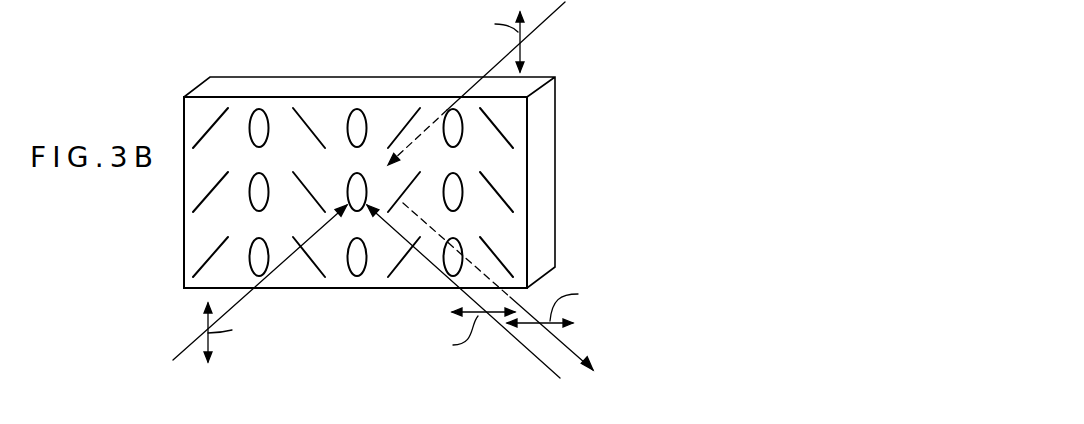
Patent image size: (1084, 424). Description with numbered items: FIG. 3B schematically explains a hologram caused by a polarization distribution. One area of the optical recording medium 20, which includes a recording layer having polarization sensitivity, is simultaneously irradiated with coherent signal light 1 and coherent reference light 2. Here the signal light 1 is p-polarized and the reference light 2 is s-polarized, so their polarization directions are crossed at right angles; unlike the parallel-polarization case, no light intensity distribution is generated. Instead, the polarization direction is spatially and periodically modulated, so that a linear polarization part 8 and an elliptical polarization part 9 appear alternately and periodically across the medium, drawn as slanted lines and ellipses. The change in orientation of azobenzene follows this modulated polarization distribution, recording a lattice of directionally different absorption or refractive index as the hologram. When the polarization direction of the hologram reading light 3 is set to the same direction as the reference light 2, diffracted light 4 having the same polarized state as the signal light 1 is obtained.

The signal light 1 is at (548, 368).
The reference light 2 is at (173, 360).
The hologram reading light 3 is at (543, 22).
The diffracted light 4 is at (565, 345).
The linear polarization part 8 is at (305, 120).
The elliptical polarization part 9 is at (362, 110).
The optical recording medium 20 is at (547, 207).